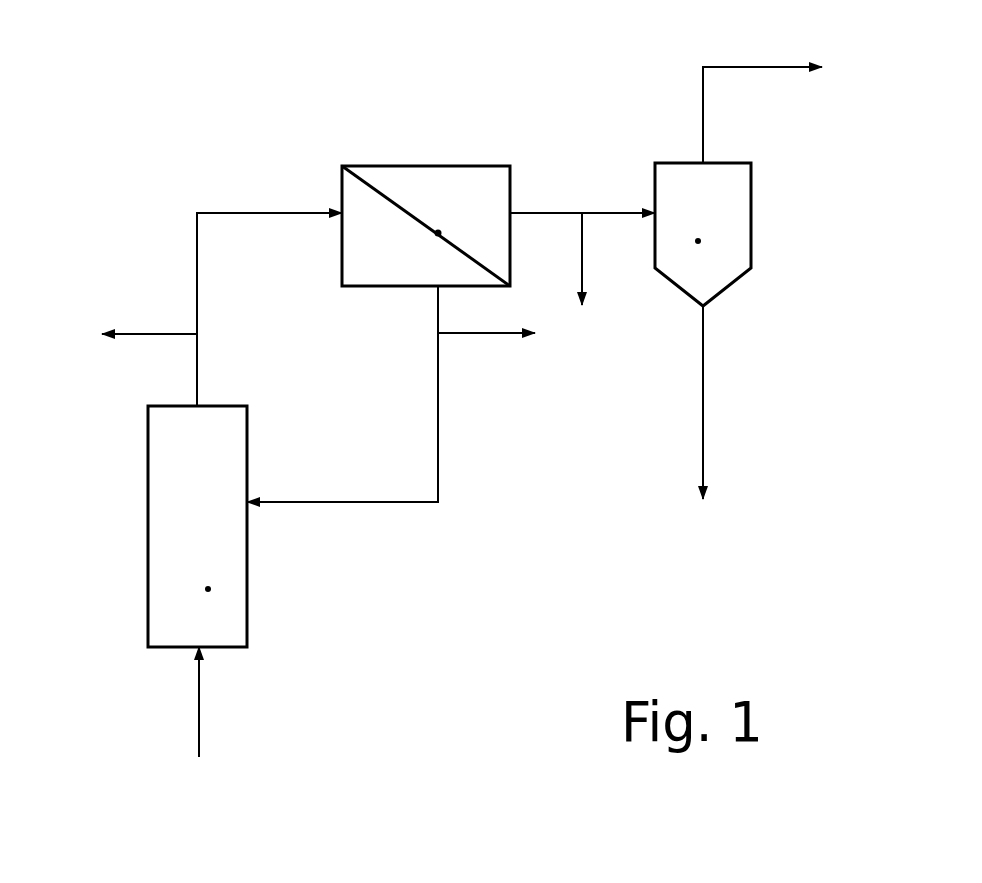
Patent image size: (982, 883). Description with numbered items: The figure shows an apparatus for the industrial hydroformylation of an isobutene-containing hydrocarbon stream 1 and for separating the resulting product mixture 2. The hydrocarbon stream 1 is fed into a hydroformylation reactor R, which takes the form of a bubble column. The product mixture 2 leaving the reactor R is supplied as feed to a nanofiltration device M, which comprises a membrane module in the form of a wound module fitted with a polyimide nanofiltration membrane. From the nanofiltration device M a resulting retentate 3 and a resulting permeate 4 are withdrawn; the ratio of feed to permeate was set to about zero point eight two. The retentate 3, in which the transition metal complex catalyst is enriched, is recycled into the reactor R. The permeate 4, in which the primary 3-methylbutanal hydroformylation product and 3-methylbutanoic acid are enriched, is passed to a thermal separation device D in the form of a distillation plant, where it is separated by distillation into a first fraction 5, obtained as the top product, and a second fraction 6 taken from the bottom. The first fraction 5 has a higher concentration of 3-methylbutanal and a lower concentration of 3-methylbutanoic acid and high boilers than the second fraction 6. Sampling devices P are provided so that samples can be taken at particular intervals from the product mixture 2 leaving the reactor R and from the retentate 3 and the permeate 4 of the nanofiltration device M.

The hydrocarbon stream 1 is at (176, 705).
The product mixture 2 is at (269, 286).
The resulting retentate 3 is at (342, 421).
The resulting permeate 4 is at (582, 231).
The first fraction 5 is at (762, 87).
The second fraction 6 is at (728, 402).
The nanofiltration device M is at (438, 145).
The hydroformylation reactor R is at (208, 589).
The thermal separation device D is at (698, 241).
The sampler P is at (324, 338).